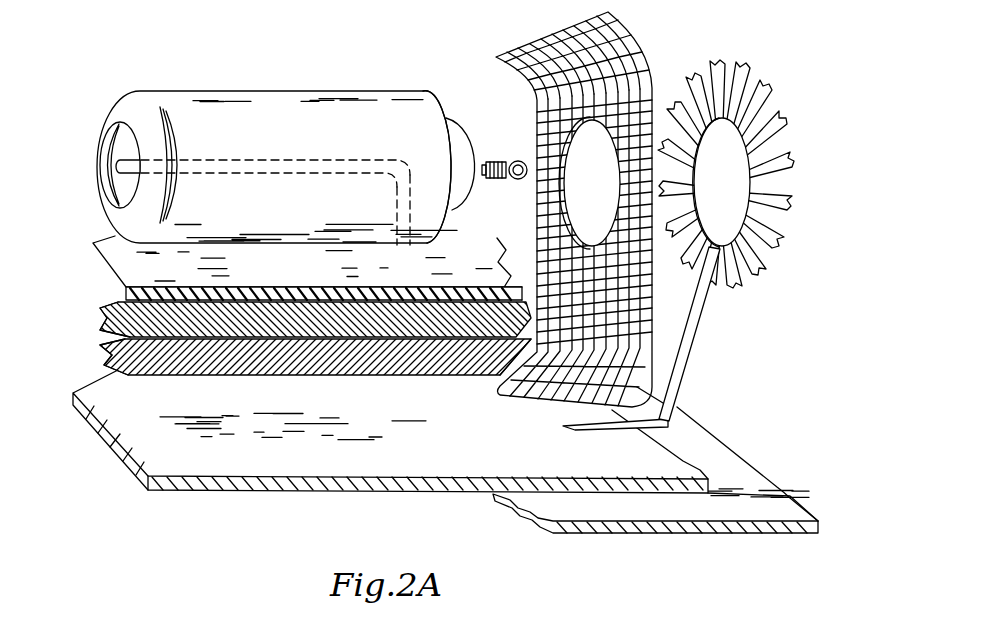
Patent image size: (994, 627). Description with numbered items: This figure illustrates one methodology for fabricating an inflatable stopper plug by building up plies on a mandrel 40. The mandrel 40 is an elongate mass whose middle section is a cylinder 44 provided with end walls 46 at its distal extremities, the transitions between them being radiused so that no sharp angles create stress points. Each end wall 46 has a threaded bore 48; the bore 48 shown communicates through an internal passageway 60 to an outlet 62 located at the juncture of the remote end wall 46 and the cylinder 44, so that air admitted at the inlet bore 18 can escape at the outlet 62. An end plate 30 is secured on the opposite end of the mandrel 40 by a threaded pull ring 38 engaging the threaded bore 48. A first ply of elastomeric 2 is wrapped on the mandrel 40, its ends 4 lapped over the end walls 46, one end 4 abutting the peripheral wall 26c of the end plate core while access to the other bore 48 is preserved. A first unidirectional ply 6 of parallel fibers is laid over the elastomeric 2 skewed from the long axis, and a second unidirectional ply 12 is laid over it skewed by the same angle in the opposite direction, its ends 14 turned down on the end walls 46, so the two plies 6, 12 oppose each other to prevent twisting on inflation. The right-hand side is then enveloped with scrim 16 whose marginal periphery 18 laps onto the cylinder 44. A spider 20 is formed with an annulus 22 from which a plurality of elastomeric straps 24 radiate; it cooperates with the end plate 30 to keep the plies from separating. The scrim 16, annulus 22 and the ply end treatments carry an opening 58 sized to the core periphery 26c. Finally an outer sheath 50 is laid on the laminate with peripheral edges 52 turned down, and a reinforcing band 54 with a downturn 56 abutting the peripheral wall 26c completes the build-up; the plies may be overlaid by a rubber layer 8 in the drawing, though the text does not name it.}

The first ply of elastomeric 2 is at (318, 272).
The ends of the first ply of elastomeric 4 is at (138, 282).
The first unidirectional ply 6 is at (355, 316).
The broken edge 8 is at (106, 306).
The second unidirectional ply 12 is at (275, 365).
The ends of the second unidirectional ply 14 is at (132, 360).
The scrim 16 is at (632, 72).
The marginal periphery of the scrim 18 is at (540, 37).
The spider 20 is at (770, 74).
The annulus 22 is at (703, 165).
The straps 24 is at (783, 222).
The peripheral wall of the core 26c is at (462, 140).
The end plate 30 is at (456, 96).
The threaded pull ring 38 is at (515, 182).
The mandrel 40 is at (288, 66).
The cylinder 44 is at (222, 93).
The end walls 46 is at (128, 110).
The threaded bore 48 is at (116, 170).
The outer sheath 50 is at (479, 465).
The peripheral edges of the outer sheath 52 is at (160, 448).
The reinforcing band 54 is at (583, 512).
The downturn 56 is at (750, 492).
The opening 58 is at (577, 187).
The internal passageway 60 is at (322, 160).
The outlet 62 is at (392, 233).